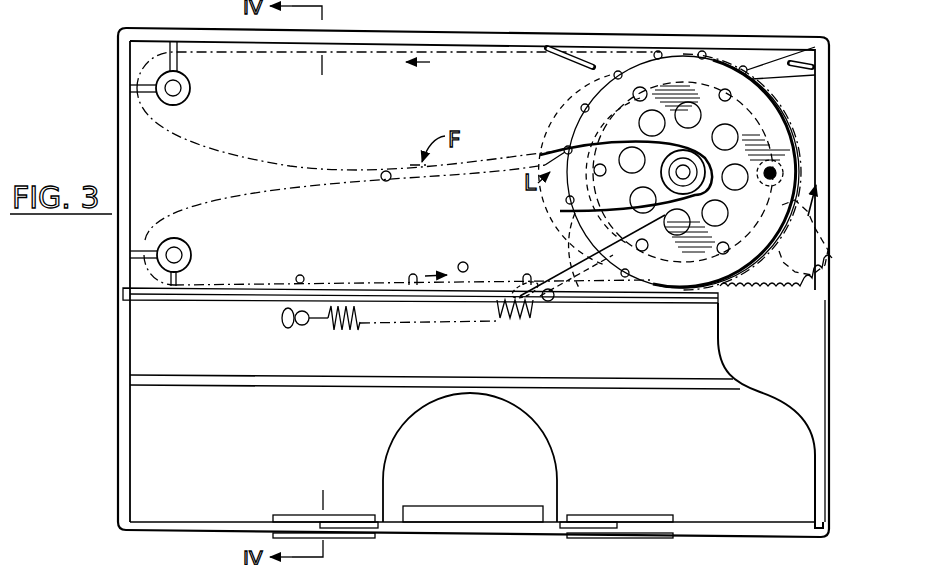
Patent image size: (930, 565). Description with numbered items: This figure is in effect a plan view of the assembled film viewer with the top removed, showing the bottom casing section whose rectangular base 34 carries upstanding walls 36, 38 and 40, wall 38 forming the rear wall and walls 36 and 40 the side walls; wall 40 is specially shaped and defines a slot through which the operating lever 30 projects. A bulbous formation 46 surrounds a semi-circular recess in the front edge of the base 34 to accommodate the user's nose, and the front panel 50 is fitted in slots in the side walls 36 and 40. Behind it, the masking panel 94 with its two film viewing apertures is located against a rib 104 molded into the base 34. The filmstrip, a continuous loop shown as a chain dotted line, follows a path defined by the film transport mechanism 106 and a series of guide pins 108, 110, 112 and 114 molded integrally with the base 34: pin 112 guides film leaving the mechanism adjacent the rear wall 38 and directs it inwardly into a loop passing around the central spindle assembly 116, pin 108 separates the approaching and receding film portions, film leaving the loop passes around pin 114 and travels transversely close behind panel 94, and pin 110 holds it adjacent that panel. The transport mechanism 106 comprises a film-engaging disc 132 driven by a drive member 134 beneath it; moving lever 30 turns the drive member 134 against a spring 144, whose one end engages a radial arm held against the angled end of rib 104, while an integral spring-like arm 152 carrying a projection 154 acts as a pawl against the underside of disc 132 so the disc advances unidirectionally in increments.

The operating lever 30 is at (822, 212).
The base 34 is at (435, 414).
The wall 36 is at (118, 335).
The wall 38 is at (455, 33).
The wall 40 is at (820, 486).
The bulbous formation 46 is at (540, 468).
The front panel 50 is at (200, 520).
The masking panel 94 is at (228, 300).
The rib 104 is at (357, 283).
The film transport mechanism 106 is at (765, 70).
The guide pin 108 is at (386, 171).
The guide pin 110 is at (462, 262).
The guide pin 112 is at (191, 88).
The guide pin 114 is at (192, 255).
The central spindle assembly 116 is at (722, 196).
The film-engaging disc 132 is at (620, 71).
The drive member 134 is at (765, 128).
The spring 144 is at (530, 318).
The spring-like arm 152 is at (592, 97).
The projection 154 is at (577, 222).